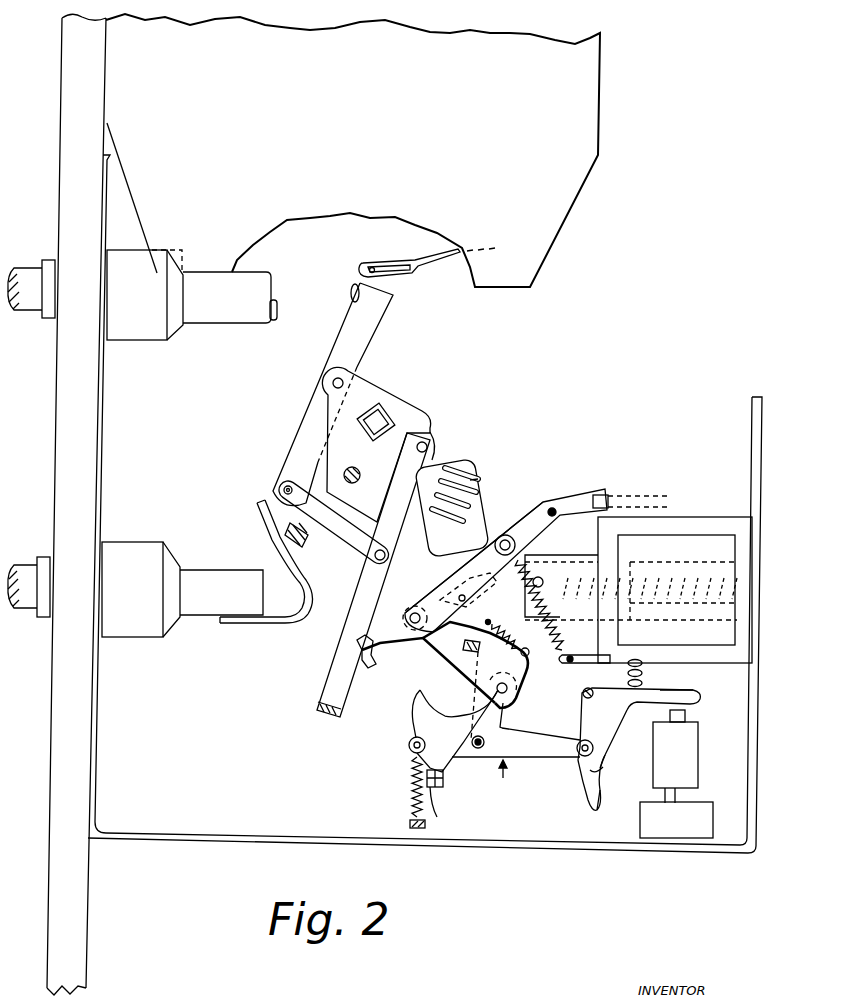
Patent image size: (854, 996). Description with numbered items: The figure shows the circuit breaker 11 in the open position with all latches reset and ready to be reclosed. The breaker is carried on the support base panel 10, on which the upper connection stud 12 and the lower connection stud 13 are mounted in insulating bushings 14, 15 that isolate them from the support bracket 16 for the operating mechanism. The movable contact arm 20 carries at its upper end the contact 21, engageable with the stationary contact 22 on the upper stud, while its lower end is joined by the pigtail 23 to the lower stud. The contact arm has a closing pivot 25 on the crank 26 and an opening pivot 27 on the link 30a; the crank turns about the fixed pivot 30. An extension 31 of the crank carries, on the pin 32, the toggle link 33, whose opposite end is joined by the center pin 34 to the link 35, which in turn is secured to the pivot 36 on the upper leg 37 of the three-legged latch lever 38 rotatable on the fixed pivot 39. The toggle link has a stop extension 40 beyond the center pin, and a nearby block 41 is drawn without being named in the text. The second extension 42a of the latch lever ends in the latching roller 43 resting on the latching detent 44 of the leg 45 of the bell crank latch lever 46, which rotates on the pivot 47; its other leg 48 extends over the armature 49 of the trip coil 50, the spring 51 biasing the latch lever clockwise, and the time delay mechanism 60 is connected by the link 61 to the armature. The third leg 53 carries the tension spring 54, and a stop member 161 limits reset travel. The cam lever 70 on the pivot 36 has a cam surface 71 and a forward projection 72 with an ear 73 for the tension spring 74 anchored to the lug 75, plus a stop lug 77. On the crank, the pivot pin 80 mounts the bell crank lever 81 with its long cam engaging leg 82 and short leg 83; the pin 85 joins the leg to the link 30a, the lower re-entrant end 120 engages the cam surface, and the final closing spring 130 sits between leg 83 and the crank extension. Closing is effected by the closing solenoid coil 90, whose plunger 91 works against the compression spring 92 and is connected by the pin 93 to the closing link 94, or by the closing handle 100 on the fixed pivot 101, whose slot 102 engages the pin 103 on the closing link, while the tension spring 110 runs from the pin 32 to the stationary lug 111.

The support base panel 10 is at (72, 167).
The circuit breaker 11 is at (556, 276).
The upper connection stud 12 is at (215, 312).
The lower connection stud 13 is at (193, 607).
The insulating bushing 14 is at (150, 333).
The insulating bushing 15 is at (132, 625).
The support bracket 16 is at (104, 427).
The movable contact arm 20 is at (371, 325).
The contact 21 is at (354, 288).
The stationary contact 22 is at (279, 309).
The pigtail 23 is at (273, 622).
The closing pivot 25 is at (348, 381).
The crank 26 is at (405, 414).
The opening pivot 27 is at (278, 487).
The fixed pivot 30 is at (356, 467).
The link 30a is at (338, 530).
The extension 31 is at (470, 537).
The pin 32 is at (506, 537).
The toggle link 33 is at (432, 588).
The pin 34 is at (414, 627).
The link 35 is at (462, 665).
The pivot 36 is at (508, 688).
The upper leg 37 is at (505, 723).
The three-legged latch lever 38 is at (503, 779).
The fixed pivot 39 is at (478, 750).
The stop extension 40 is at (368, 666).
The stop block 41 is at (466, 645).
The second extension 42a is at (516, 754).
The latching roller 43 is at (580, 757).
The latching detent 44 is at (603, 777).
The leg 45 is at (604, 767).
The bell crank latch lever 46 is at (613, 727).
The pivot 47 is at (588, 688).
The leg 48 is at (683, 700).
The armature 49 is at (686, 716).
The trip coil 50 is at (698, 758).
The spring 51 is at (643, 674).
The third leg 53 is at (442, 809).
The tension spring 54 is at (412, 787).
The time delay mechanism 60 is at (713, 817).
The link 61 is at (677, 797).
The cam lever 70 is at (470, 712).
The cam surface 71 is at (420, 712).
The forward projection 72 is at (524, 668).
The ear 73 is at (529, 652).
The tension spring 74 is at (504, 632).
The lug 75 is at (480, 623).
The stop lug 77 is at (497, 676).
The pivot pin 80 is at (428, 444).
The bell crank lever 81 is at (403, 463).
The cam engaging leg 82 is at (333, 665).
The leg 83 is at (466, 460).
The pin 85 is at (368, 559).
The closing solenoid coil 90 is at (713, 548).
The plunger 91 is at (585, 567).
The compression spring 92 is at (695, 580).
The pin 93 is at (543, 577).
The closing link 94 is at (526, 597).
The closing handle 100 is at (610, 491).
The fixed pivot 101 is at (553, 508).
The slot 102 is at (468, 584).
The pin 103 is at (461, 595).
The tension spring 110 is at (562, 636).
The stationary lug 111 is at (588, 657).
The lower re-entrant end 120 is at (320, 718).
The final closing spring 130 is at (480, 492).
The stop member 161 is at (447, 786).